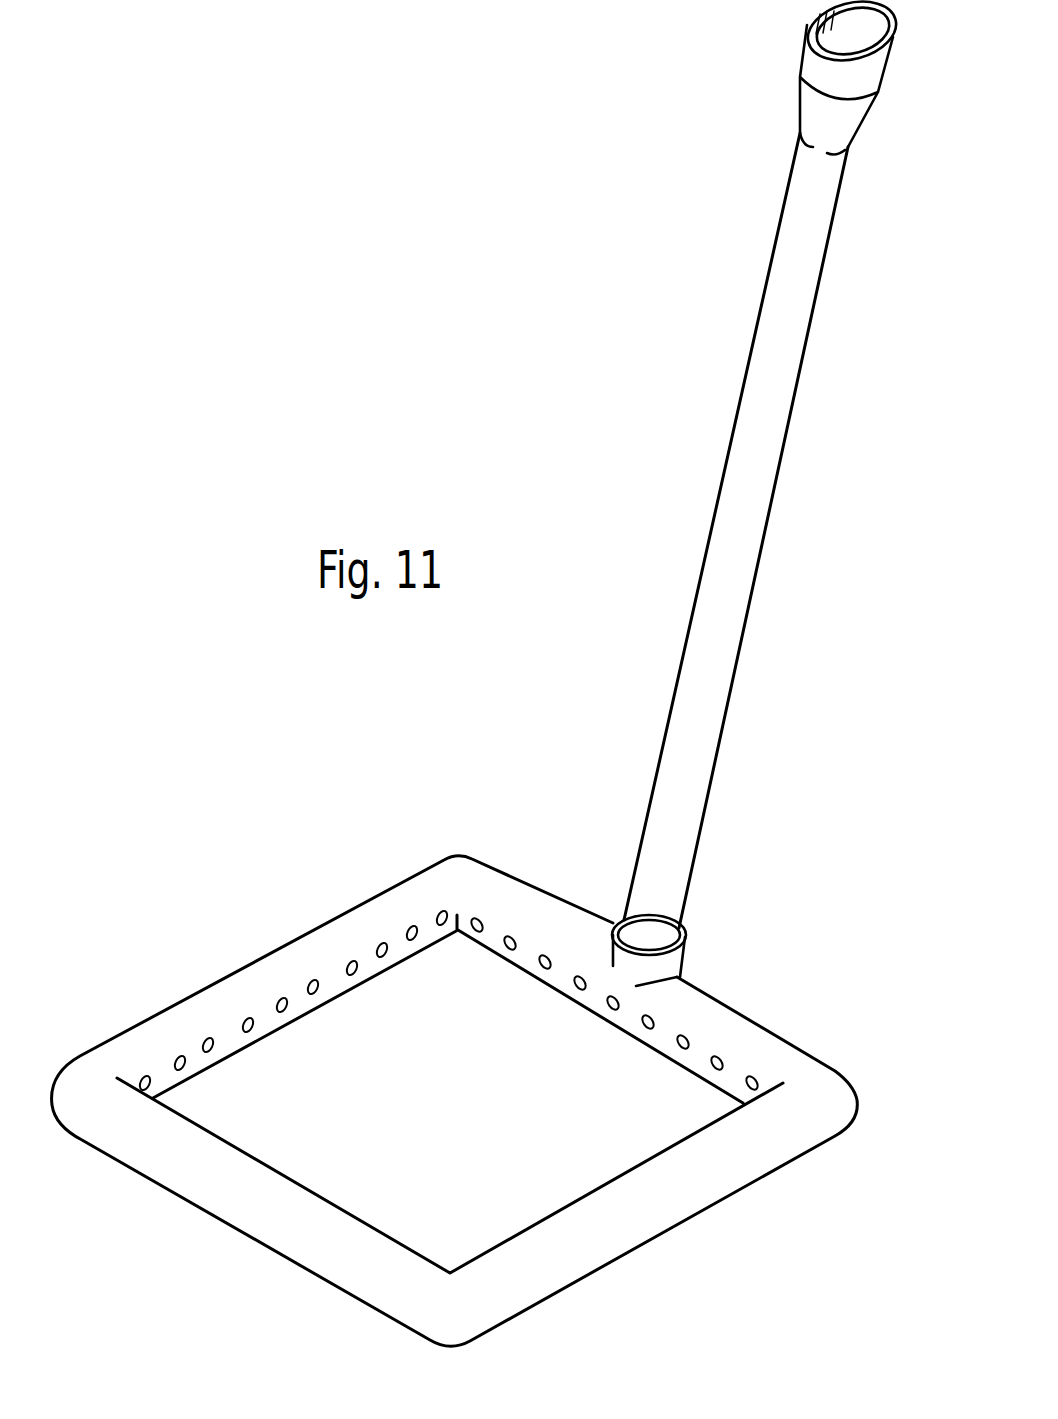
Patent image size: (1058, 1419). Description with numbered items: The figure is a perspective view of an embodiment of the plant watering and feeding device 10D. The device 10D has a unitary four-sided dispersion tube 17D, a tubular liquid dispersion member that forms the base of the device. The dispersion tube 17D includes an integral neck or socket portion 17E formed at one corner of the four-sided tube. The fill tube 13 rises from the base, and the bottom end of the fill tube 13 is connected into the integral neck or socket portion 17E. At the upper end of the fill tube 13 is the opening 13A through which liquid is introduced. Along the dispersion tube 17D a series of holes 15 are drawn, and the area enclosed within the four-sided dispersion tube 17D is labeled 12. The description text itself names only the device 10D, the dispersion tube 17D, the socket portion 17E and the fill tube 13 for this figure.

The plant watering and feeding device 10D is at (532, 722).
The base plate 12 is at (462, 1128).
The fill tube 13 is at (790, 468).
The pole top socket 13A is at (805, 53).
The holes 15 is at (180, 1068).
The unitary four-sided dispersion tube 17D is at (283, 950).
The integral neck or socket portion 17E is at (680, 958).